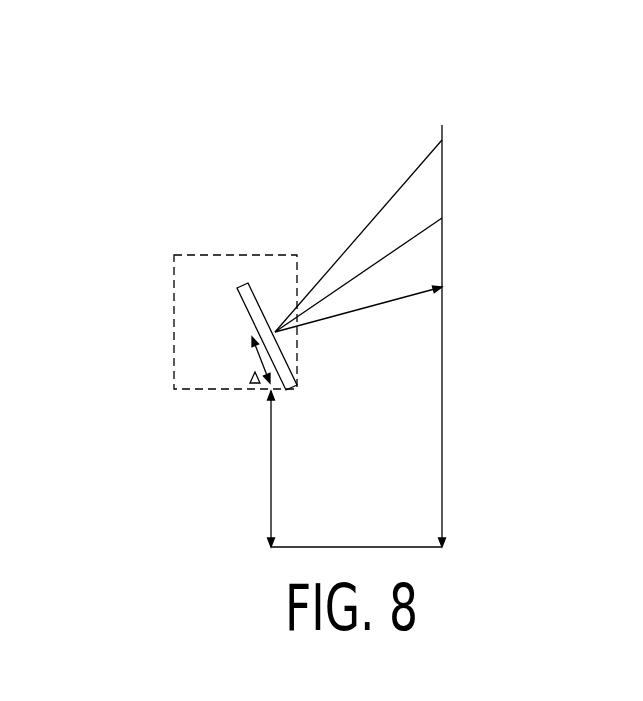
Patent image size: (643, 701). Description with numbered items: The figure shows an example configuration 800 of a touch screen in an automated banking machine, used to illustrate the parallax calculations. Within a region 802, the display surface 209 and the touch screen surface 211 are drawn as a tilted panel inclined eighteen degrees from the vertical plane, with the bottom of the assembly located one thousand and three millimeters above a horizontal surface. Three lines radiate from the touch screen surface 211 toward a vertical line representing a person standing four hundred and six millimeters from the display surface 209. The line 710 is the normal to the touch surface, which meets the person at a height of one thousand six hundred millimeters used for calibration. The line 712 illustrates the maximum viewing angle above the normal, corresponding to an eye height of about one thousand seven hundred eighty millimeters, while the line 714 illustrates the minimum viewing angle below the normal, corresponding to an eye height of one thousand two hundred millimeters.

The calibration setup 800 is at (186, 114).
The mirror adjustment region 802 is at (212, 255).
The touch screen surface 211 is at (278, 278).
The display surface 209 is at (215, 318).
The maximum viewing angle line 712 is at (380, 211).
The normal line 710 is at (423, 231).
The minimum viewing angle line 714 is at (378, 305).